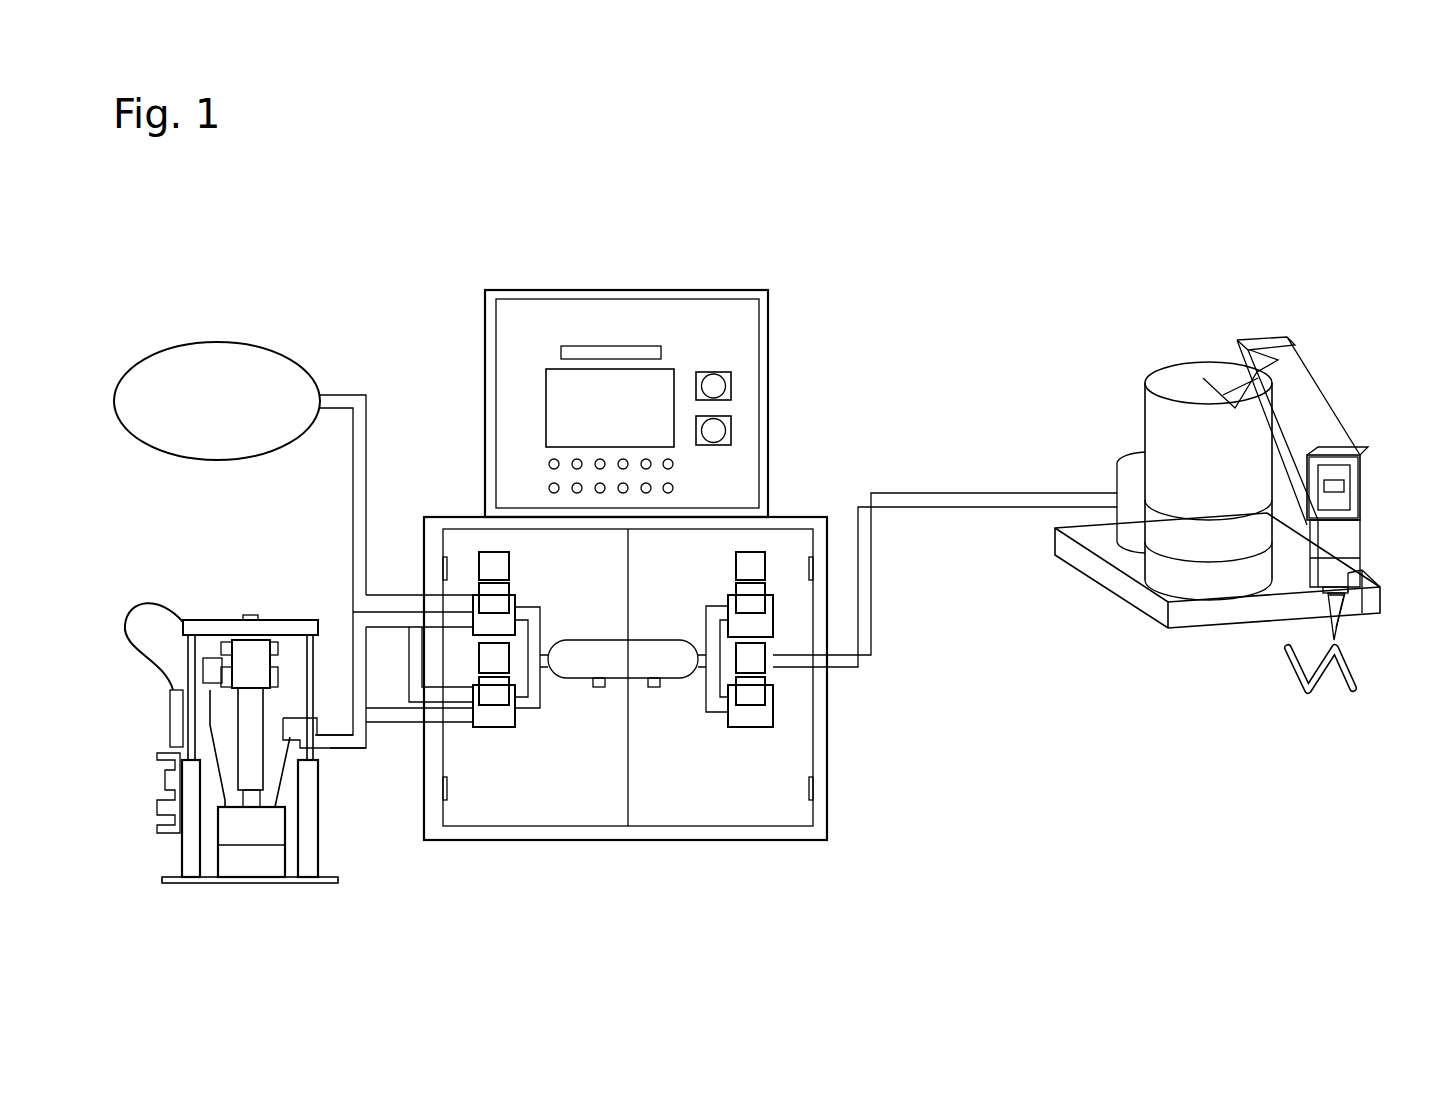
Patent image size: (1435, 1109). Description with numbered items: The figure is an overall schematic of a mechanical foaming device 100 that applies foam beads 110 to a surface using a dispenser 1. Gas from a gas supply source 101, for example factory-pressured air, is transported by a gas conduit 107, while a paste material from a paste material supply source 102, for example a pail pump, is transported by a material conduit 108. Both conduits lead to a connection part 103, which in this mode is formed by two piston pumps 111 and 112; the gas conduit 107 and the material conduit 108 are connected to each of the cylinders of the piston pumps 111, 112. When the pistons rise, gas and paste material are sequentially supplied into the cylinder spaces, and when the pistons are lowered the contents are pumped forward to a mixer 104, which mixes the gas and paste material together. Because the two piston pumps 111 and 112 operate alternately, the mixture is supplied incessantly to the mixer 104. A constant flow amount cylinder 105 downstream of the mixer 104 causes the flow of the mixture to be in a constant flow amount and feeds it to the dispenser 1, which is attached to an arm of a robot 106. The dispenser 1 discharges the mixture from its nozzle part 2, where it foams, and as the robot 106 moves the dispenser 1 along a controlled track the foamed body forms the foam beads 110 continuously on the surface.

The dispenser 1 is at (1377, 473).
The nozzle part 2 is at (1350, 612).
The mechanical foaming device 100 is at (618, 282).
The gas supply source 101 is at (185, 345).
The paste material supply source 102 is at (283, 840).
The connection part 103 is at (492, 632).
The mixer 104 is at (612, 636).
The constant flow amount cylinder 105 is at (764, 550).
The robot 106 is at (1195, 330).
The gas conduit 107 is at (367, 438).
The material conduit 108 is at (337, 745).
The foam beads 110 is at (1330, 702).
The piston pump 111 is at (485, 597).
The piston pump 112 is at (492, 697).